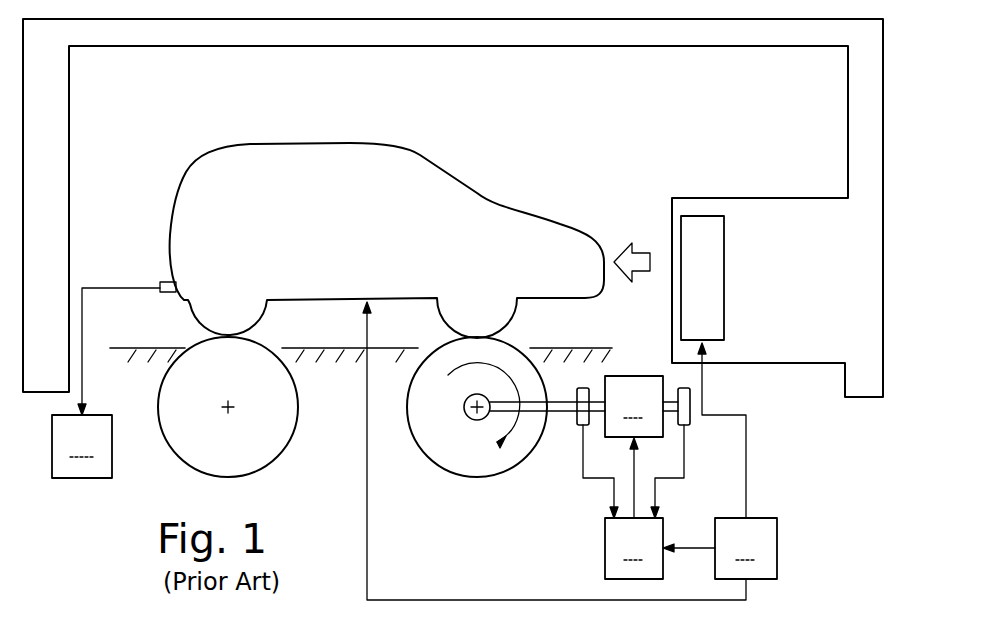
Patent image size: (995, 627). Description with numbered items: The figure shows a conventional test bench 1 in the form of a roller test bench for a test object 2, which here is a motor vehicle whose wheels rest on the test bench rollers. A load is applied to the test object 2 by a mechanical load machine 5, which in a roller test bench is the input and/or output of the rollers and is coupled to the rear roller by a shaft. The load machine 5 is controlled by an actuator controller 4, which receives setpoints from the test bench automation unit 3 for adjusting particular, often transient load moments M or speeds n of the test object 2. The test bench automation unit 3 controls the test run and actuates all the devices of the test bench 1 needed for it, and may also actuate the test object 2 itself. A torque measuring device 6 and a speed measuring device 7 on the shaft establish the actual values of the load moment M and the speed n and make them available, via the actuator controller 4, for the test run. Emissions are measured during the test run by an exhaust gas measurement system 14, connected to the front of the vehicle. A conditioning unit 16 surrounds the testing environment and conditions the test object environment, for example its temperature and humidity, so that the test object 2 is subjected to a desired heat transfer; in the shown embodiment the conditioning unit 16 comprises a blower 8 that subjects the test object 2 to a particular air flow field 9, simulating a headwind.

The test bench 1 is at (487, 157).
The test object 2 is at (182, 197).
The test bench automation unit 3 is at (570, 451).
The actuator controller 4 is at (634, 508).
The load machine 5 is at (584, 406).
The torque measuring device 6 is at (576, 426).
The speed measuring device 7 is at (686, 427).
The blower 8 is at (727, 257).
The air flow field 9 is at (639, 250).
The exhaust gas measurement system 14 is at (106, 383).
The conditioning unit 16 is at (820, 363).